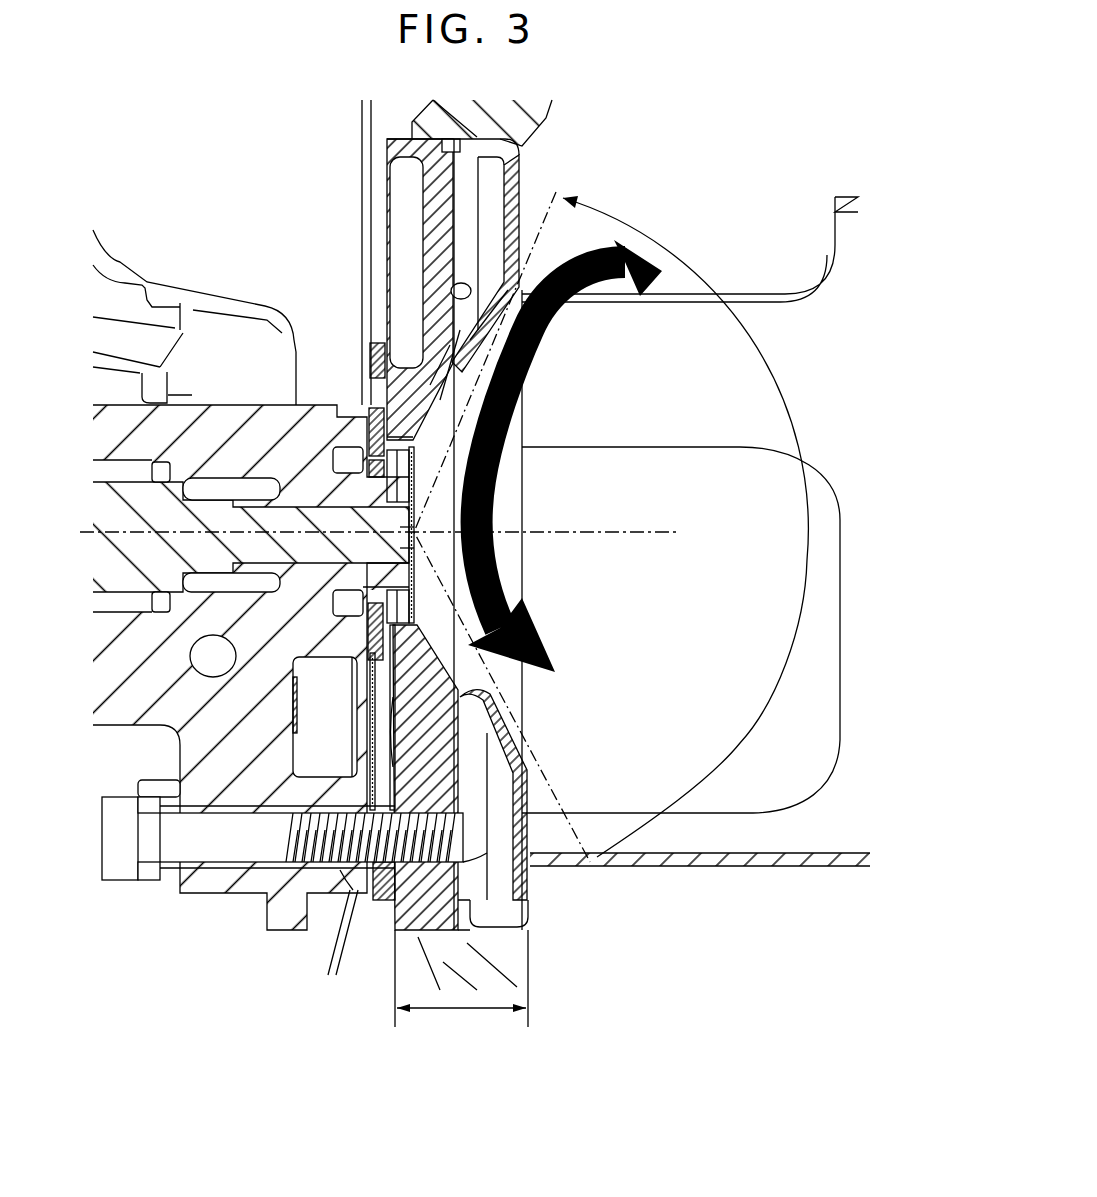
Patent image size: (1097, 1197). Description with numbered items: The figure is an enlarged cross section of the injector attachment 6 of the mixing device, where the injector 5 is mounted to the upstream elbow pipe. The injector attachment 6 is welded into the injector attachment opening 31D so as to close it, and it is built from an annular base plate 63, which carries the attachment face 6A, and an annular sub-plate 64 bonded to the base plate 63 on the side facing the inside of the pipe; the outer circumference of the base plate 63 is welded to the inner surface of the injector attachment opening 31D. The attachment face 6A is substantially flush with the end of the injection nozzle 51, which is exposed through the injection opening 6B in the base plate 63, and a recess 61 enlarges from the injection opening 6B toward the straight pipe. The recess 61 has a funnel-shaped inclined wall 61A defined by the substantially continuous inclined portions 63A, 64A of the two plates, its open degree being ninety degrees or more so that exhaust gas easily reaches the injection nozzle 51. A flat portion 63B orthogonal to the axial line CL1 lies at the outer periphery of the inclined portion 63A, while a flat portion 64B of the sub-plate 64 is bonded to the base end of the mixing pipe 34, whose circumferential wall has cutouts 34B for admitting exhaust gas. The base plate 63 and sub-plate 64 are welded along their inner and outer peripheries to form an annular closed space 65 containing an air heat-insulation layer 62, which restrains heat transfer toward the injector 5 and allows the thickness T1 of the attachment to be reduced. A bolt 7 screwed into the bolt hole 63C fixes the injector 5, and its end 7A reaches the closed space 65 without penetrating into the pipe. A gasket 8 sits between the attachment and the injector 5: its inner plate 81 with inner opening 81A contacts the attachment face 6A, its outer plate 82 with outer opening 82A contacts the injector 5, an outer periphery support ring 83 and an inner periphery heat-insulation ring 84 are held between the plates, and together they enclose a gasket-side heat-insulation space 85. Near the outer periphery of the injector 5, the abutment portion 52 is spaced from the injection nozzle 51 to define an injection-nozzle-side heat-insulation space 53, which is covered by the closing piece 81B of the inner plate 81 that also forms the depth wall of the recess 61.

The injector 5 is at (227, 330).
The injector attachment 6 is at (405, 228).
The attachment face 6A is at (365, 365).
The injection opening 6B is at (360, 440).
The bolt 7 is at (196, 853).
The end of the bolt 7A is at (480, 850).
The gasket 8 is at (375, 890).
The injector attachment opening 31D is at (413, 129).
The mixing pipe 34 is at (730, 866).
The cutouts 34B is at (733, 294).
The injection nozzle 51 is at (397, 527).
The abutment portion 52 is at (413, 440).
The injection-nozzle-side heat-insulation space 53 is at (400, 603).
The recess 61 is at (523, 428).
The inclined wall 61A is at (549, 365).
The heat-insulation layer 62 is at (497, 190).
The base plate 63 is at (437, 262).
The inclined portion of the base plate 63A is at (437, 400).
The flat portion of the base plate 63B is at (453, 292).
The bolt hole 63C is at (418, 937).
The sub-plate 64 is at (487, 143).
The inclined portion of the sub-plate 64A is at (500, 343).
The flat portion of the sub-plate 64B is at (520, 190).
The closed space 65 is at (493, 795).
The inner plate 81 is at (380, 902).
The inner opening 81A is at (420, 547).
The closing piece 81B is at (417, 588).
The outer plate 82 is at (370, 880).
The outer opening 82A is at (337, 600).
The outer periphery support ring 83 is at (353, 890).
The inner periphery heat-insulation ring 84 is at (368, 640).
The gasket-side heat-insulation space 85 is at (370, 717).
The axial line CL1 is at (402, 533).
The thickness of the injector attachment T1 is at (461, 982).